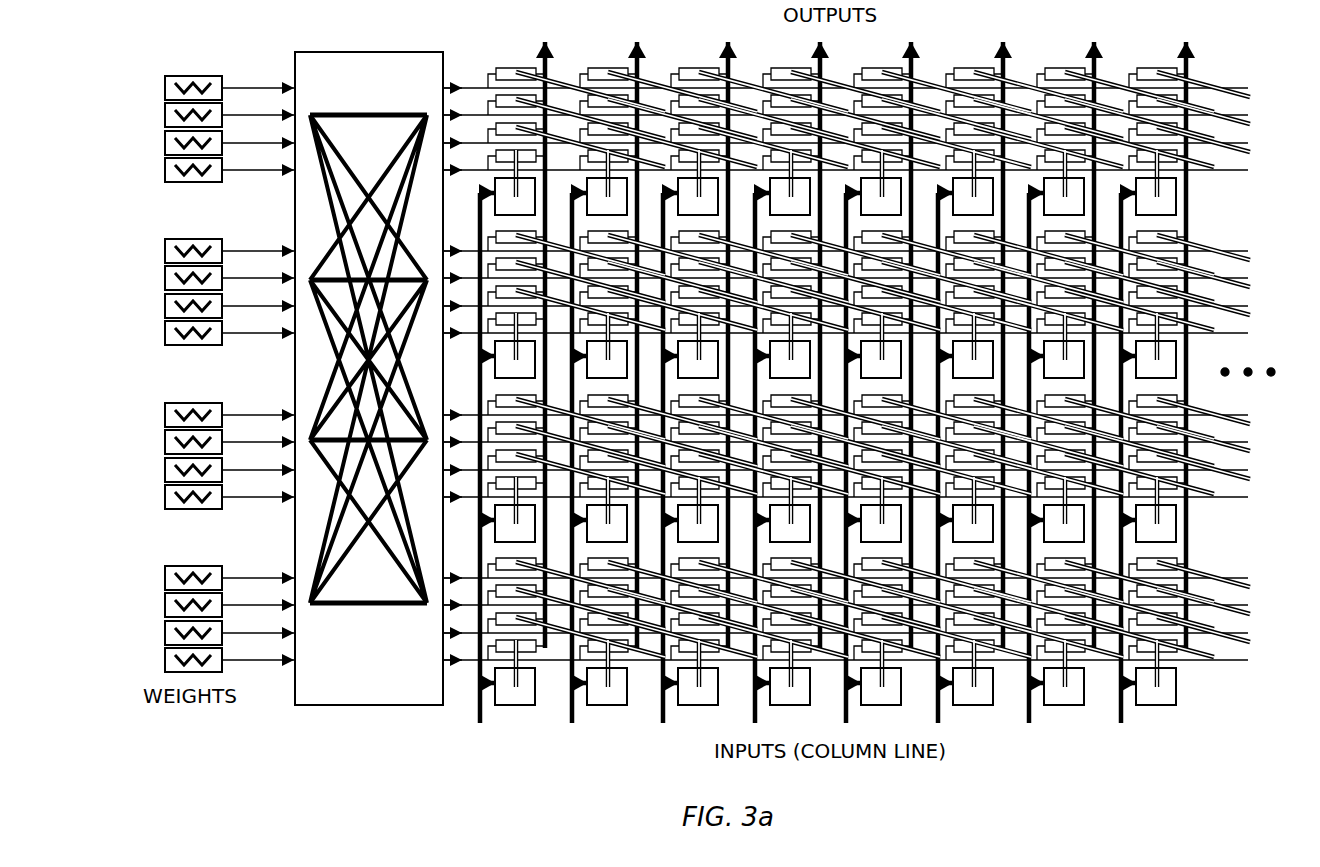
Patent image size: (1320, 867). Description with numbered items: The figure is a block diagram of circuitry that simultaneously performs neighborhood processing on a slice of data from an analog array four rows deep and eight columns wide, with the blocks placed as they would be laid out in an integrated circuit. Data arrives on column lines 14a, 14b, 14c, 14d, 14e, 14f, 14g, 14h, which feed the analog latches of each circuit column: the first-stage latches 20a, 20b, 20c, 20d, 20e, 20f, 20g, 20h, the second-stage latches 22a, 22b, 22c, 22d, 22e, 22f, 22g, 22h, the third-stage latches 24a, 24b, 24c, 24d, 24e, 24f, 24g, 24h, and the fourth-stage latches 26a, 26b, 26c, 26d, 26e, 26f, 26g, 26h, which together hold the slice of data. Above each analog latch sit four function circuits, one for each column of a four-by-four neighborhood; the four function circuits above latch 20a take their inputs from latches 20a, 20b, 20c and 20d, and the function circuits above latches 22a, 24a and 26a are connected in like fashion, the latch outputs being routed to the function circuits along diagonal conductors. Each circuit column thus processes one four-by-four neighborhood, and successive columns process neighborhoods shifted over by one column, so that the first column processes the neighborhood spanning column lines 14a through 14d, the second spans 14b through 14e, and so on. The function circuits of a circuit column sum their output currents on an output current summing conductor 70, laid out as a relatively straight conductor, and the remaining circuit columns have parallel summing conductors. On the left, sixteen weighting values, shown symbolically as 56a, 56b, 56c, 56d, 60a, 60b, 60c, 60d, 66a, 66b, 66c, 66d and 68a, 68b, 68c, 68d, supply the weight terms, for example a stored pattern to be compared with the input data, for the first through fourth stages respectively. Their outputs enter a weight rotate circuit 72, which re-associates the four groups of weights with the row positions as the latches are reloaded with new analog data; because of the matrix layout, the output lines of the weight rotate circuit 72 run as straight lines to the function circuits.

The weighting value 68a is at (164, 171).
The weighting value 68b is at (164, 144).
The weighting value 68c is at (164, 116).
The weighting value 68d is at (164, 89).
The weighting value 66a is at (164, 334).
The weighting value 66b is at (164, 307).
The weighting value 66c is at (164, 279).
The weighting value 66d is at (164, 252).
The weighting value 60a is at (164, 498).
The weighting value 60b is at (164, 471).
The weighting value 60c is at (164, 443).
The weighting value 60d is at (164, 416).
The weighting value 56a is at (164, 661).
The weighting value 56b is at (164, 634).
The weighting value 56c is at (164, 606).
The weighting value 56d is at (164, 579).
The output current summing conductor 70 is at (551, 46).
The weight rotate circuit 72 is at (366, 705).
The analog latch 26a is at (515, 196).
The analog latch 26b is at (607, 196).
The analog latch 26c is at (698, 196).
The analog latch 26d is at (790, 196).
The analog latch 26e is at (881, 196).
The analog latch 26f is at (973, 196).
The analog latch 26g is at (1064, 196).
The analog latch 26h is at (1156, 196).
The analog latch 24a is at (515, 359).
The analog latch 24b is at (607, 359).
The analog latch 24c is at (698, 359).
The analog latch 24d is at (790, 359).
The analog latch 24e is at (881, 359).
The analog latch 24f is at (973, 359).
The analog latch 24g is at (1064, 359).
The analog latch 24h is at (1156, 359).
The analog latch 22a is at (515, 523).
The analog latch 22b is at (607, 523).
The analog latch 22c is at (698, 523).
The analog latch 22d is at (790, 523).
The analog latch 22e is at (881, 523).
The analog latch 22f is at (973, 523).
The analog latch 22g is at (1064, 523).
The analog latch 22h is at (1156, 523).
The analog latch 20a is at (515, 686).
The analog latch 20b is at (607, 686).
The analog latch 20c is at (698, 686).
The analog latch 20d is at (790, 686).
The analog latch 20e is at (881, 686).
The analog latch 20f is at (973, 686).
The analog latch 20g is at (1064, 686).
The analog latch 20h is at (1156, 686).
The column line 14a is at (483, 717).
The column line 14b is at (575, 717).
The column line 14c is at (666, 717).
The column line 14d is at (758, 717).
The column line 14e is at (849, 717).
The column line 14f is at (941, 717).
The column line 14g is at (1032, 717).
The column line 14h is at (1124, 717).